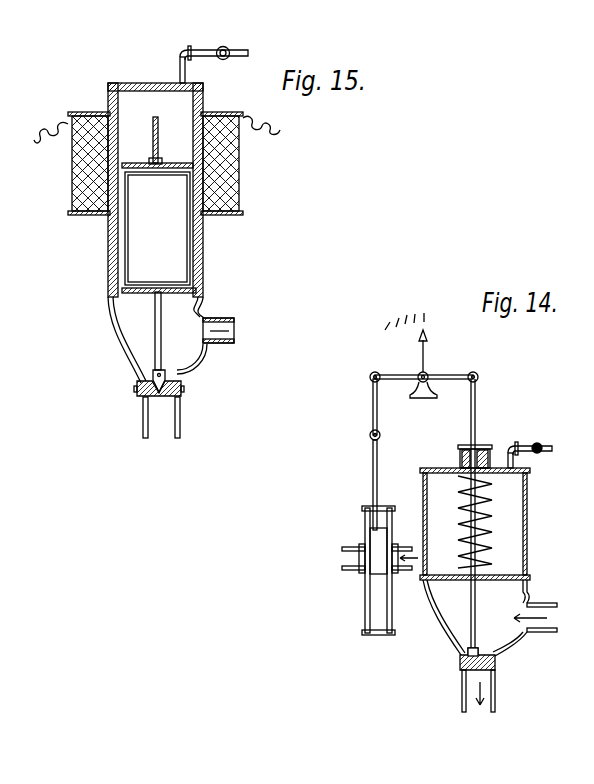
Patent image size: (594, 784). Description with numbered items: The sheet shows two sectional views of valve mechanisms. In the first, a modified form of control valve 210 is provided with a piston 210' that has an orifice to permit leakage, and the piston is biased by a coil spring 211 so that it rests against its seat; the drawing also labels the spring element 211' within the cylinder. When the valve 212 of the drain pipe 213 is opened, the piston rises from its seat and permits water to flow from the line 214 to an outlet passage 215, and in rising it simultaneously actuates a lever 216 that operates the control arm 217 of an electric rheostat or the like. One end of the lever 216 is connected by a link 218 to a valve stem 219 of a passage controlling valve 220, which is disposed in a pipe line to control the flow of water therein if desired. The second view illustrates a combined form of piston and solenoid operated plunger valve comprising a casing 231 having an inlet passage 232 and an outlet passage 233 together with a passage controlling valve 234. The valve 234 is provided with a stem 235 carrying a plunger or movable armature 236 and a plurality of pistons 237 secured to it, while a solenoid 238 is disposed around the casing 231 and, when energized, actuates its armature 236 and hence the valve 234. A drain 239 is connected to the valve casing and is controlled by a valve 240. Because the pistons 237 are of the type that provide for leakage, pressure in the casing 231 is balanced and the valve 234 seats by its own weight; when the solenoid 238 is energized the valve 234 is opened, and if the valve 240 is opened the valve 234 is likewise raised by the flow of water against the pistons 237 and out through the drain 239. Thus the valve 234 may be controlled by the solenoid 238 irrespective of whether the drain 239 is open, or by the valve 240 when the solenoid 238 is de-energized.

In FIG. 15, the casing 231 is at (203, 225).
In FIG. 15, the inlet passage 232 is at (232, 328).
In FIG. 15, the outlet passage 233 is at (155, 427).
In FIG. 15, the passage controlling valve 234 is at (168, 378).
In FIG. 15, the stem 235 is at (162, 328).
In FIG. 15, the plunger or movable armature 236 is at (185, 248).
In FIG. 15, the pistons 237 is at (193, 163).
In FIG. 15, the solenoid 238 is at (240, 195).
In FIG. 15, the drain 239 is at (175, 93).
In FIG. 15, the valve 240 is at (229, 48).
In FIG. 14, the control valve 210 is at (502, 668).
In FIG. 14, the piston 210' is at (465, 618).
In FIG. 14, the coil spring 211 is at (497, 512).
In FIG. 14, the spring 211' is at (520, 513).
In FIG. 14, the valve 212 is at (541, 443).
In FIG. 14, the drain pipe 213 is at (550, 453).
In FIG. 14, the line 214 is at (560, 630).
In FIG. 14, the outlet passage 215 is at (488, 697).
In FIG. 14, the lever 216 is at (463, 372).
In FIG. 14, the control arm 217 is at (426, 348).
In FIG. 14, the link 218 is at (378, 422).
In FIG. 14, the valve stem 219 is at (378, 457).
In FIG. 14, the passage controlling valve 220 is at (380, 572).